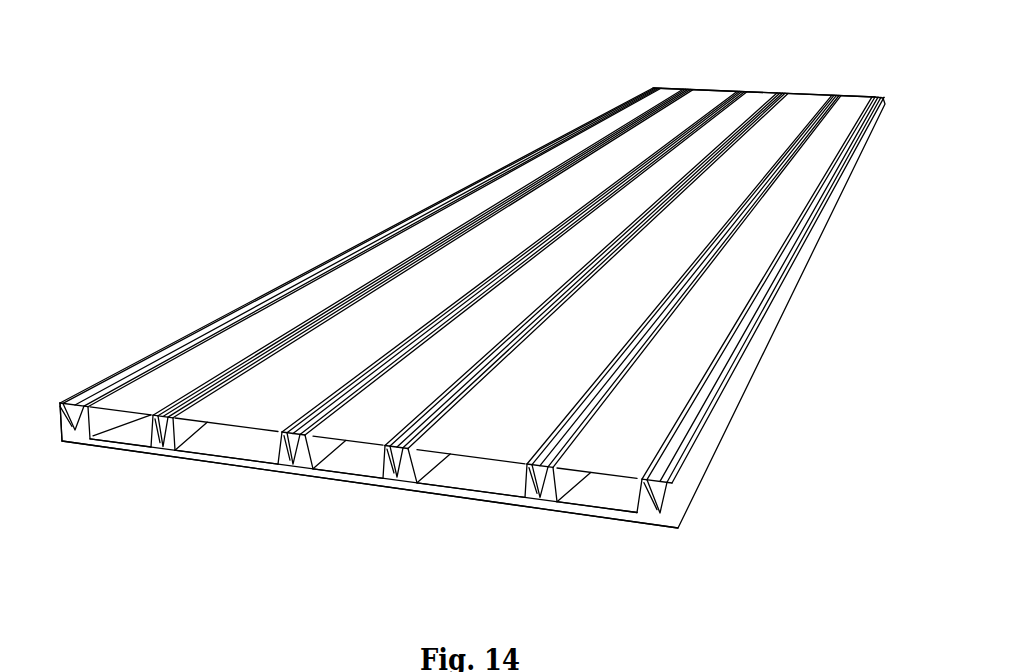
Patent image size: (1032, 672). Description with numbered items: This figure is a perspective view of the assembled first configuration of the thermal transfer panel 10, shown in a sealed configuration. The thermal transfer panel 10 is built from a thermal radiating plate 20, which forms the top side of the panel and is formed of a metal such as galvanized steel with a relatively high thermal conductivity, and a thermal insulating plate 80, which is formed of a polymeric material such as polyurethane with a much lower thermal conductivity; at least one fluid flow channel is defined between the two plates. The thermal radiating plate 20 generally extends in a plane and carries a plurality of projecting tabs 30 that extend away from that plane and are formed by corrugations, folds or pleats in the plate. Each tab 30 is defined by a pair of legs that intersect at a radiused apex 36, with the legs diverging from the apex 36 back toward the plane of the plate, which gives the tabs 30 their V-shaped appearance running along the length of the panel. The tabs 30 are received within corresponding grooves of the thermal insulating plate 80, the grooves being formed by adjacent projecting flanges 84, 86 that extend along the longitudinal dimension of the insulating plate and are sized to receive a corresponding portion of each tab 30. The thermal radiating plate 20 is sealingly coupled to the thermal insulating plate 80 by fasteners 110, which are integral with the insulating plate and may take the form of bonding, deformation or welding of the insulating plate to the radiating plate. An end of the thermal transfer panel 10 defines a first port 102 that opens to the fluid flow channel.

The thermal transfer panel 10 is at (322, 170).
The thermal radiating plate 20 is at (667, 88).
The projecting tabs 30 is at (165, 442).
The apex 36 is at (393, 483).
The thermal insulating plate 80 is at (473, 492).
The projecting flange 84 is at (140, 432).
The projecting flange 86 is at (203, 442).
The first port 102 is at (602, 498).
The fasteners 110 is at (168, 413).